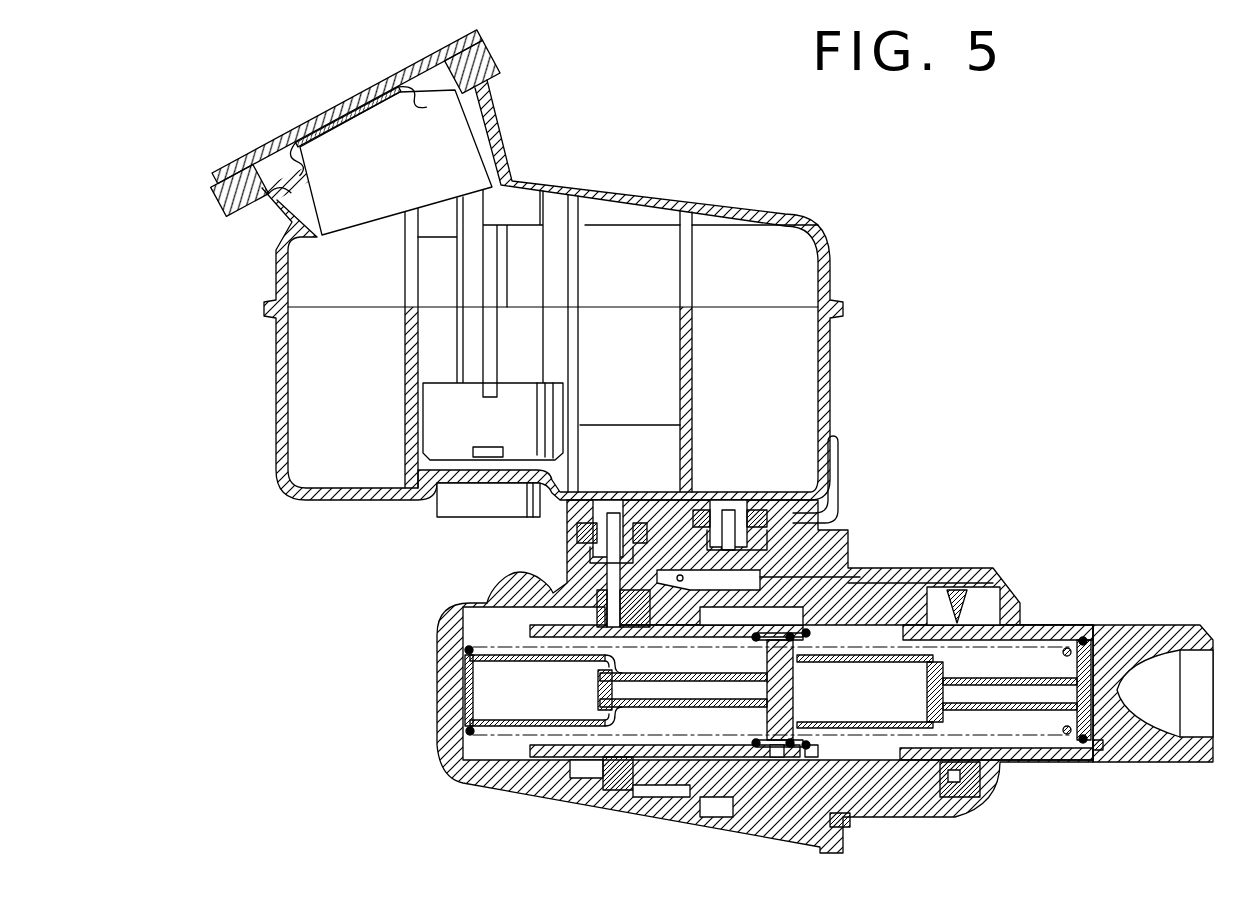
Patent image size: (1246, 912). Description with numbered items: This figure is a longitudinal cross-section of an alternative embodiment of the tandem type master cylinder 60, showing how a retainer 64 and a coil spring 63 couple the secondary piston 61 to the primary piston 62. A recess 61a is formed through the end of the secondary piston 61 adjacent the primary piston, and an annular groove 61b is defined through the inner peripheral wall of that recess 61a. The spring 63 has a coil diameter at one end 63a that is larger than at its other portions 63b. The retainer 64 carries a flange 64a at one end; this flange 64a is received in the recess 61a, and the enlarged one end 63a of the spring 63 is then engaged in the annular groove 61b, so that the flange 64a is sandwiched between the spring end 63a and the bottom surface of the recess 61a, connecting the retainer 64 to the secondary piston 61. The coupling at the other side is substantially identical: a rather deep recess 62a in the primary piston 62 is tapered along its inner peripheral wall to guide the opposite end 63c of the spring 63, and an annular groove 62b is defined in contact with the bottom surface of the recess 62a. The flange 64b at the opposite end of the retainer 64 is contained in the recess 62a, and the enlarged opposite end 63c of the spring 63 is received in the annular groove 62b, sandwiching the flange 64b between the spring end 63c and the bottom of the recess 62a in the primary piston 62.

The tandem type master cylinder 60 is at (868, 467).
The secondary piston 61 is at (547, 752).
The recess 61a is at (778, 742).
The annular groove 61b is at (812, 742).
The primary piston 62 is at (1160, 628).
The recess 62a is at (1022, 750).
The annular groove 62b is at (1097, 750).
The spring 63 is at (907, 740).
The one end of the spring 63a is at (812, 636).
The other portions of the spring 63b is at (883, 742).
The opposite end of the spring 63c is at (1079, 748).
The retainer 64 is at (1022, 680).
The flange 64a is at (797, 662).
The flange 64b is at (1093, 650).